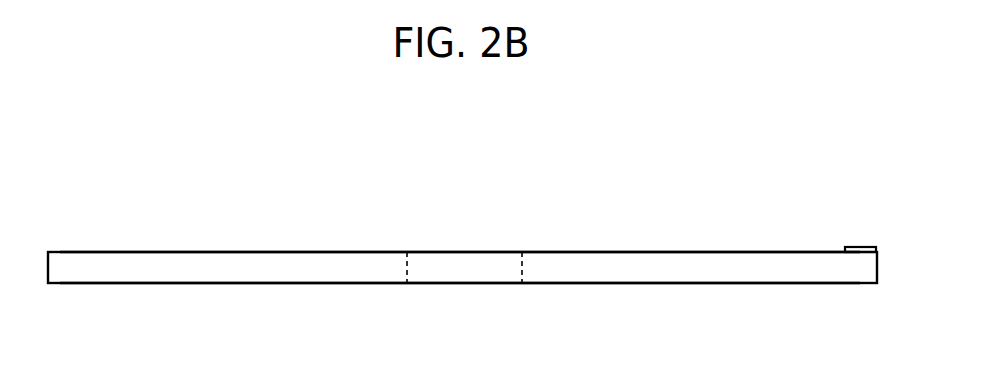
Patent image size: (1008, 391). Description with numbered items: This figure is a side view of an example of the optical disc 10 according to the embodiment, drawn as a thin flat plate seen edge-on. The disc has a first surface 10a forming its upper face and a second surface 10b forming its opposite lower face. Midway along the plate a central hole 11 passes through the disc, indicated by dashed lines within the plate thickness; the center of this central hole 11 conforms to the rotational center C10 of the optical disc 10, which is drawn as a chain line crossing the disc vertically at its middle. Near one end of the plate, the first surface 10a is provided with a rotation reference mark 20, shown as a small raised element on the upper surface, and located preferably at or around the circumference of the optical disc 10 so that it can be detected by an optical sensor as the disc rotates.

The optical disc 10 is at (681, 222).
The first surface 10a is at (120, 252).
The second surface 10b is at (120, 284).
The central hole 11 is at (408, 268).
The rotation reference mark 20 is at (864, 246).
The rotational center C10 is at (464, 348).